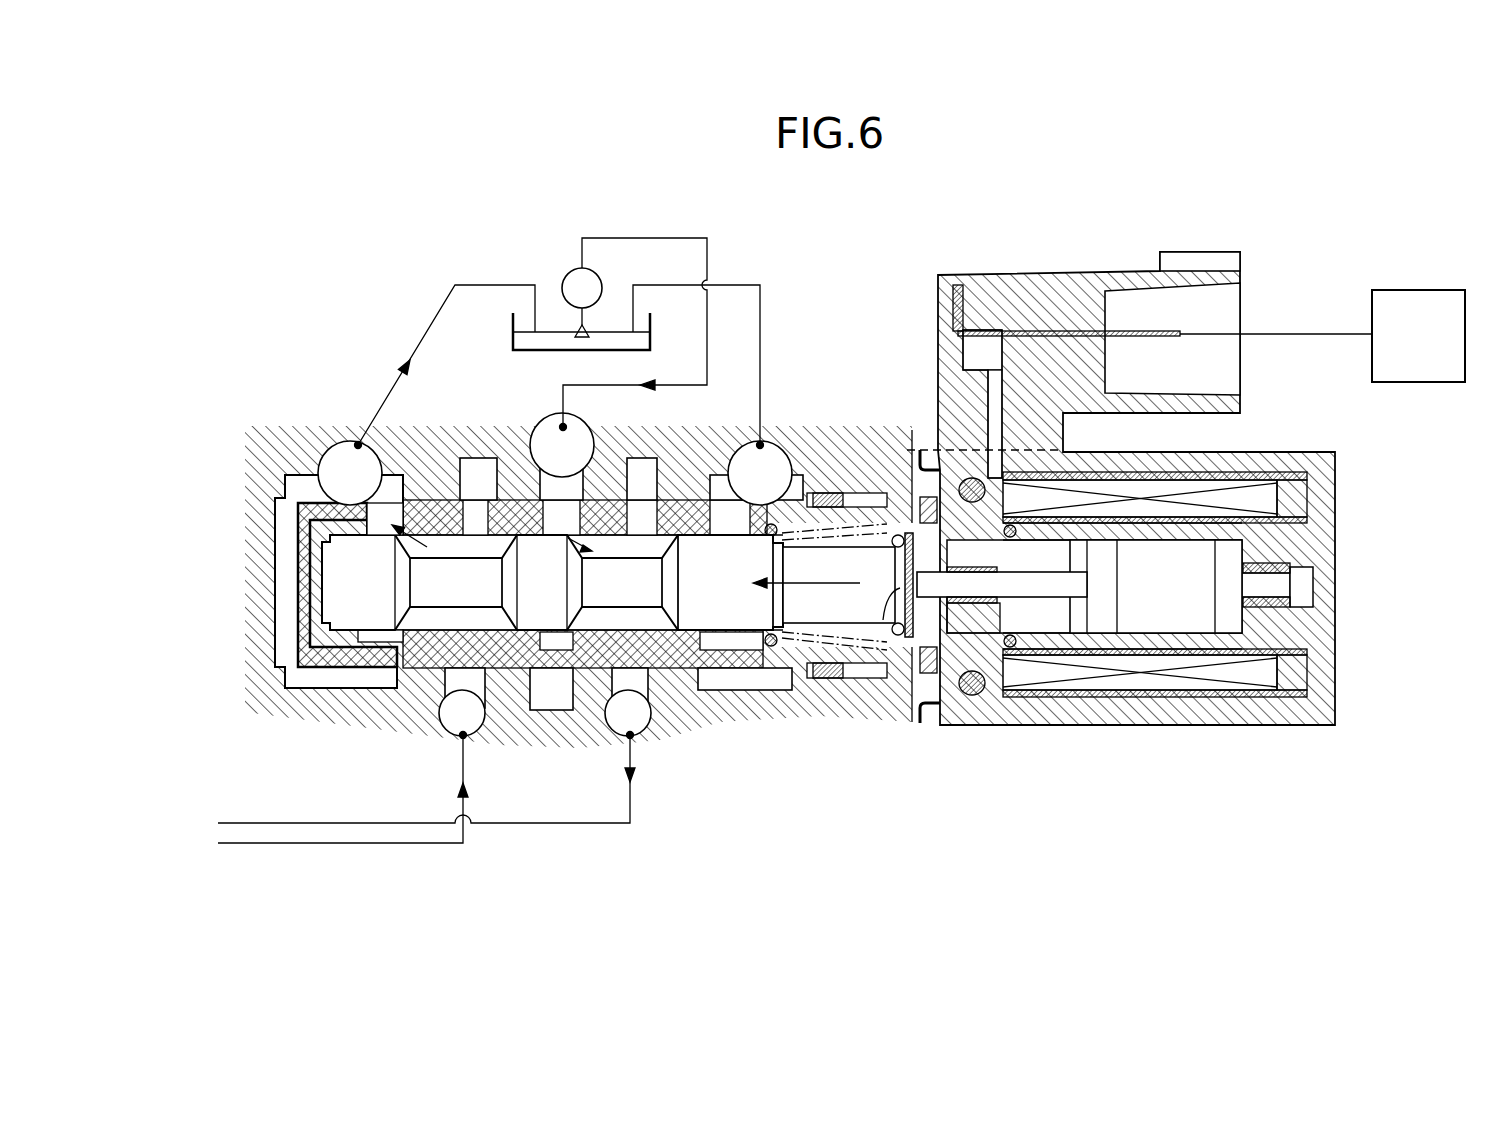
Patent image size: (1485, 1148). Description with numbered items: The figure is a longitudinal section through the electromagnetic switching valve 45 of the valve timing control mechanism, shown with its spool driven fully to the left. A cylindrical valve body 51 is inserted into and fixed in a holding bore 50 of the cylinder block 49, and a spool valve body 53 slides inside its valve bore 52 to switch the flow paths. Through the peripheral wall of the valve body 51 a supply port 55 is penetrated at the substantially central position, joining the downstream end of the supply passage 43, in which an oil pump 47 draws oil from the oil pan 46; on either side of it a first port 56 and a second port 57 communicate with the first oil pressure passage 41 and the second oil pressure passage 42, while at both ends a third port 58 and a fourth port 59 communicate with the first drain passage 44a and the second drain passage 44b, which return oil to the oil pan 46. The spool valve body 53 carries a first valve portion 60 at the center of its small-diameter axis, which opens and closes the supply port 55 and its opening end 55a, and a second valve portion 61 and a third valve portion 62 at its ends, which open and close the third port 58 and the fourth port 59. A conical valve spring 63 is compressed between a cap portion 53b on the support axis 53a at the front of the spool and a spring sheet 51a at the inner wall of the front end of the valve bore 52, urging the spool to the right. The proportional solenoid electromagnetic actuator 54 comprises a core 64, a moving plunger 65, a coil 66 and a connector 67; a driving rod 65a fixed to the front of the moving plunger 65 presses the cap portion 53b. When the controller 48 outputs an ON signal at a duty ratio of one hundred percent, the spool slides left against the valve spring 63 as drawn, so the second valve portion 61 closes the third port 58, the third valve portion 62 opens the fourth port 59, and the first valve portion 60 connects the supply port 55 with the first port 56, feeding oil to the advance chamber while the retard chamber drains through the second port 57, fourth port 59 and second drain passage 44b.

The first oil pressure passage 41 is at (262, 823).
The second oil pressure passage 42 is at (362, 843).
The supply passage 43 is at (650, 237).
The first drain passage 44a is at (763, 312).
The second drain passage 44b is at (388, 392).
The electromagnetic switching valve 45 is at (318, 548).
The oil pan 46 is at (513, 338).
The oil pump 47 is at (563, 278).
The controller 48 is at (1420, 290).
The cylinder block 49 is at (905, 722).
The holding bore 50 is at (845, 680).
The valve body 51 is at (665, 655).
The spring sheet 51a is at (793, 557).
The valve bore 52 is at (607, 622).
The spool valve body 53 is at (437, 615).
The support axis 53a is at (877, 570).
The cap portion 53b is at (893, 640).
The electromagnetic actuator 54 is at (1268, 728).
The supply port 55 is at (538, 423).
The opening end 55a is at (555, 640).
The first port 56 is at (637, 520).
The second port 57 is at (474, 520).
The third port 58 is at (723, 517).
The fourth port 59 is at (390, 530).
The first valve portion 60 is at (577, 590).
The second valve portion 61 is at (713, 610).
The third valve portion 62 is at (350, 602).
The valve spring 63 is at (757, 655).
The core 64 is at (1040, 645).
The moving plunger 65 is at (1188, 608).
The driving rod 65a is at (980, 605).
The coil 66 is at (1130, 672).
The connector 67 is at (1133, 318).